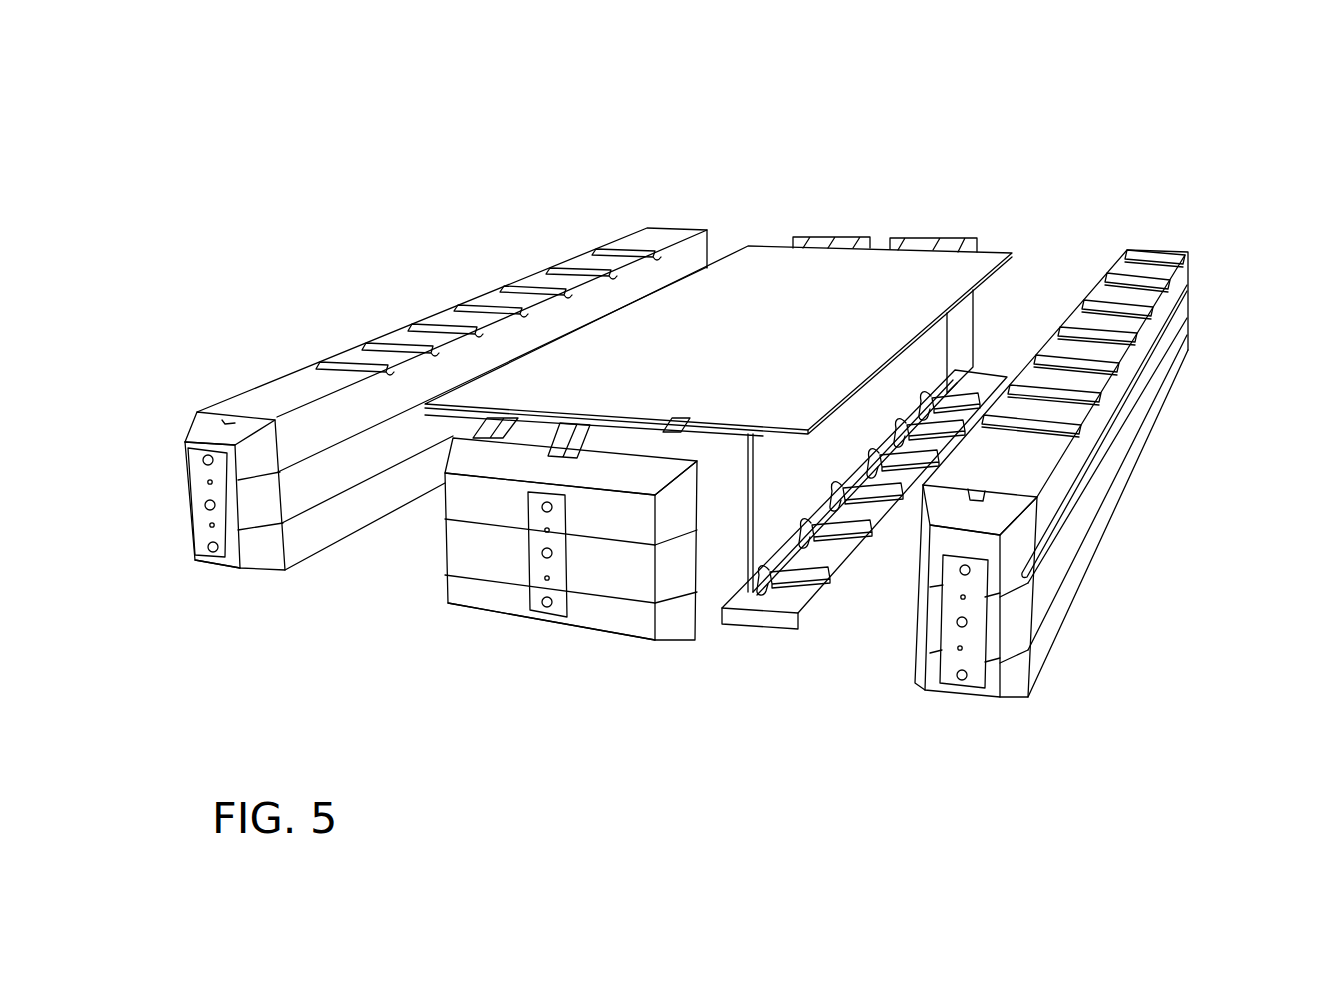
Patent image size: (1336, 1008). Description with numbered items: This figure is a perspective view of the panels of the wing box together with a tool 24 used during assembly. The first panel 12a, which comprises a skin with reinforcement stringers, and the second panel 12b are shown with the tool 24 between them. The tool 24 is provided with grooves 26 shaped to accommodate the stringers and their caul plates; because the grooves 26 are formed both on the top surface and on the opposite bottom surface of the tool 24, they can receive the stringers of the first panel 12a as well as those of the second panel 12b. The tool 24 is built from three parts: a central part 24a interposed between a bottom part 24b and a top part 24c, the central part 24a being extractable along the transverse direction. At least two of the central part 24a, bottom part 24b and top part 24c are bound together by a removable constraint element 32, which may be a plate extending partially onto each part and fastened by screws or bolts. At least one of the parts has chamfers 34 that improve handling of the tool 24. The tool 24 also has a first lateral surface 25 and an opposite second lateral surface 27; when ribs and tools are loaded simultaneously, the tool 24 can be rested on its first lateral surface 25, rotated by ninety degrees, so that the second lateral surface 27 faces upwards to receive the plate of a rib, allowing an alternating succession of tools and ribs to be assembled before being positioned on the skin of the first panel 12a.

The first panel 12a is at (797, 629).
The second panel 12b is at (831, 278).
The tool 24 is at (1183, 248).
The central part 24a is at (187, 500).
The bottom part 24b is at (198, 565).
The top part 24c is at (188, 436).
The first lateral surface 25 is at (1066, 526).
The grooves 26 is at (1150, 327).
The second lateral surface 27 is at (277, 373).
The constraint element 32 is at (547, 620).
The chamfers 34 is at (1000, 700).